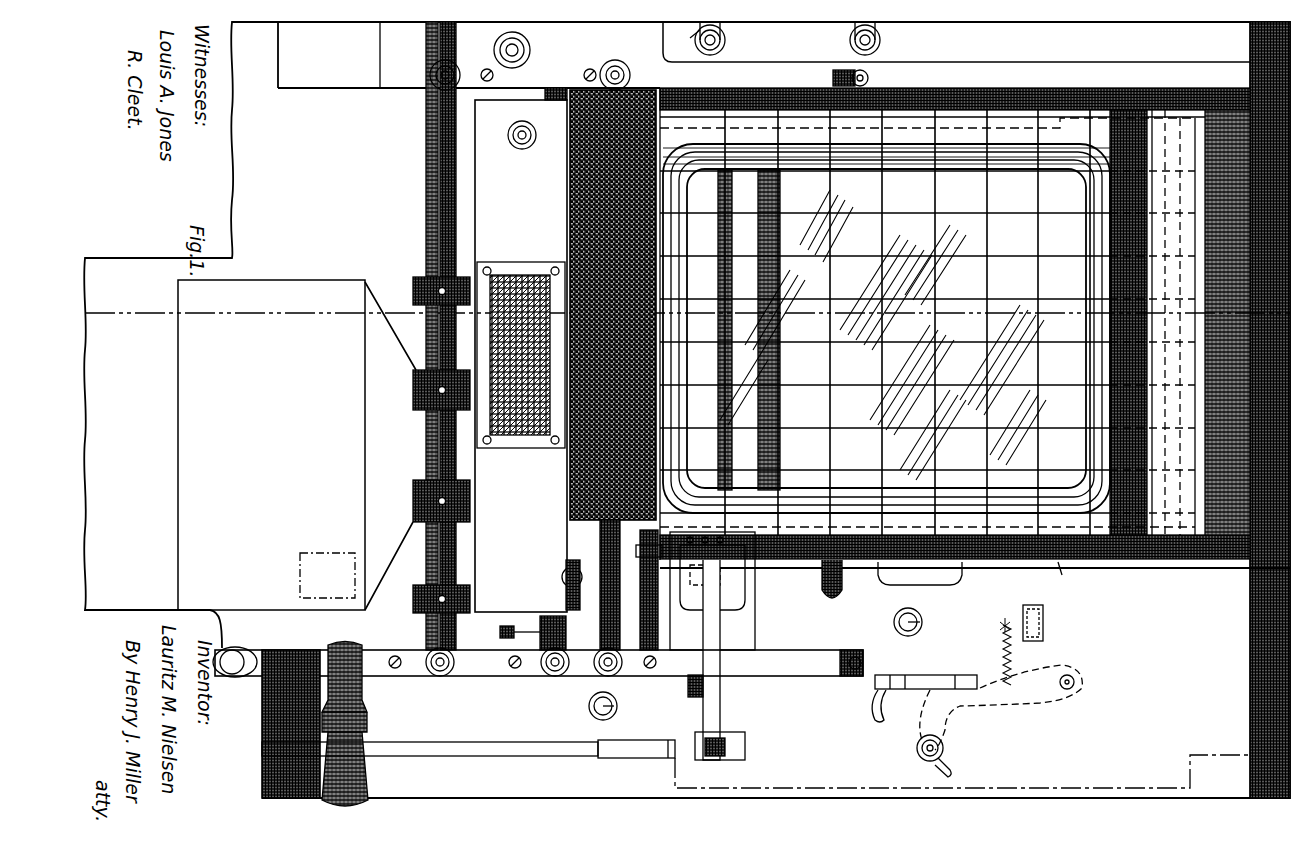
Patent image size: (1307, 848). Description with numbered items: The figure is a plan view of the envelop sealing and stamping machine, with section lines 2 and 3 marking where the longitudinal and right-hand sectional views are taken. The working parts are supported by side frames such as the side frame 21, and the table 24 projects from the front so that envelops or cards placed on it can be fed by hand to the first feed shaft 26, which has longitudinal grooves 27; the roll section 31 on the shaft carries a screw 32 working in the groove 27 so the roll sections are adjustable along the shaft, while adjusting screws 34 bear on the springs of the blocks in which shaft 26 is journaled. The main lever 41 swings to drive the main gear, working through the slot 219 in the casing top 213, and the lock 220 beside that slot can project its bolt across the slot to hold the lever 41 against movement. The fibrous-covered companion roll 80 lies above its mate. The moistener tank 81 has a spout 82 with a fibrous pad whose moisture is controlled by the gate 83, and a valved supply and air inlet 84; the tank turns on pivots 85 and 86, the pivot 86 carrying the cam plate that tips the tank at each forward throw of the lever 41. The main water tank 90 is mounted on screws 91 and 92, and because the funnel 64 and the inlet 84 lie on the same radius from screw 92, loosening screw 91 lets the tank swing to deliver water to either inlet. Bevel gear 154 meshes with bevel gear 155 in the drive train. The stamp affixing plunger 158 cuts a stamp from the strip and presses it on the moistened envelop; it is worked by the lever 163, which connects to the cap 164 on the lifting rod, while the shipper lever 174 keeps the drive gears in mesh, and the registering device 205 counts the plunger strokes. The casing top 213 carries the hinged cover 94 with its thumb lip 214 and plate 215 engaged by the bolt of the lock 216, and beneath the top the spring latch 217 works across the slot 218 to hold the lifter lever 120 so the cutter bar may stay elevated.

The section line 2— 2 is at (295, 724).
The section line 3— 3 is at (687, 315).
The side frame 21 is at (496, 676).
The table 24 is at (245, 445).
The first feed shaft 26 is at (430, 152).
The longitudinal groove 27 is at (443, 196).
The roll section 31 is at (416, 280).
The screw 32 is at (440, 290).
The adjusting screw 34 is at (445, 60).
The main lever 41 is at (450, 748).
The funnel 64 is at (531, 45).
The companion roll 80 is at (572, 470).
The tank 81 is at (521, 356).
The spout 82 is at (565, 600).
The gate 83 is at (562, 572).
The valved supply and air inlet 84 is at (518, 147).
The pivot 85 is at (556, 90).
The pivot 86 is at (572, 676).
The main water tank 90 is at (681, 39).
The screw 91 is at (726, 45).
The screw 92 is at (850, 42).
The hinged cover 94 is at (1071, 582).
The lever 120 is at (874, 712).
The bevel gear 154 is at (640, 552).
The bevel gear 155 is at (594, 585).
The stamp affixing plunger 158 is at (720, 588).
The lever 163 is at (722, 713).
The cap 164 is at (725, 750).
The shipper lever 174 is at (236, 678).
The registering device 205 is at (1022, 632).
The casing top 213 is at (1158, 631).
The thumb lip 214 is at (846, 585).
The plate 215 is at (956, 580).
The lock 216 is at (924, 624).
The spring latch 217 is at (1000, 708).
The slot 218 is at (926, 669).
The slot 219 is at (628, 758).
The lock 220 is at (617, 710).